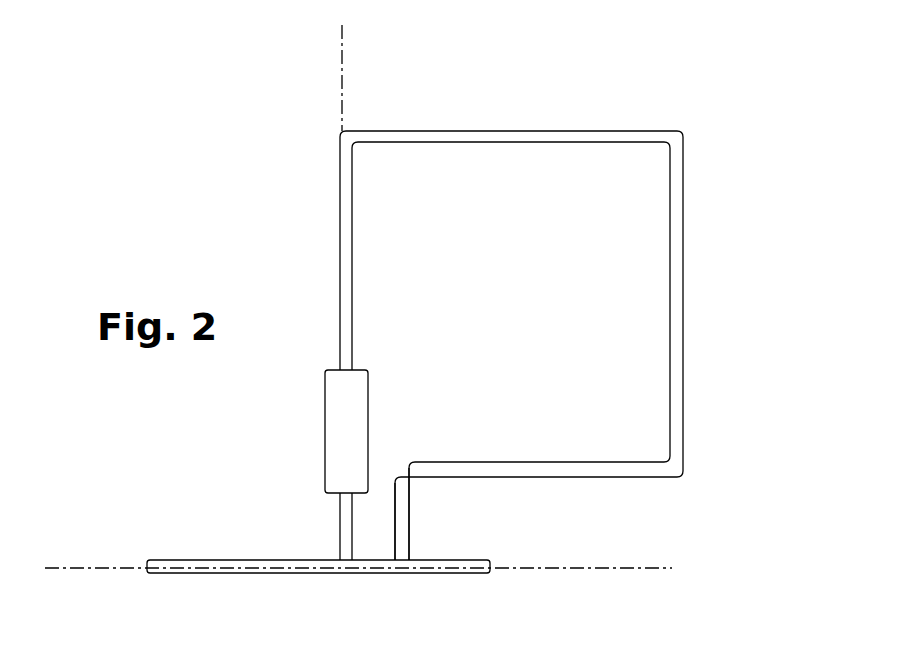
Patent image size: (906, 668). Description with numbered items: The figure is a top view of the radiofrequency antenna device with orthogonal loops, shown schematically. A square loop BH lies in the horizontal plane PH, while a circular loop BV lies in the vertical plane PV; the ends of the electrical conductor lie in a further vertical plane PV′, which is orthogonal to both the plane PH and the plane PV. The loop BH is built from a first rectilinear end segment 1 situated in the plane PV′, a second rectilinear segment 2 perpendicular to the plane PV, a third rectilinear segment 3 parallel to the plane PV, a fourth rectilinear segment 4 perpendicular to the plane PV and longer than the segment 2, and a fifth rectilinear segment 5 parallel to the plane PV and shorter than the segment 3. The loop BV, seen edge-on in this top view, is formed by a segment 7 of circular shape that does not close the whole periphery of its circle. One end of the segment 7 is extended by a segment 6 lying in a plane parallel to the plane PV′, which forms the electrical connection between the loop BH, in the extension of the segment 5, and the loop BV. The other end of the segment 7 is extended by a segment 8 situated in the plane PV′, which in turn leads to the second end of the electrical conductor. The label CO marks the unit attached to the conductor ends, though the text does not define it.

The first rectilinear end segment 1 is at (368, 400).
The second rectilinear segment 2 is at (340, 252).
The third rectilinear segment 3 is at (523, 131).
The fourth rectilinear segment 4 is at (668, 253).
The fifth rectilinear segment 5 is at (524, 470).
The segment 6 is at (405, 540).
The segment of circular shape 7 is at (377, 568).
The segment 8 is at (356, 447).
The control unit CO is at (318, 428).
The vertical plane PV is at (583, 567).
The vertical plane PV′ is at (345, 62).
The horizontal plane PH is at (718, 197).
The loop BV is at (306, 595).
The loop BH is at (703, 502).